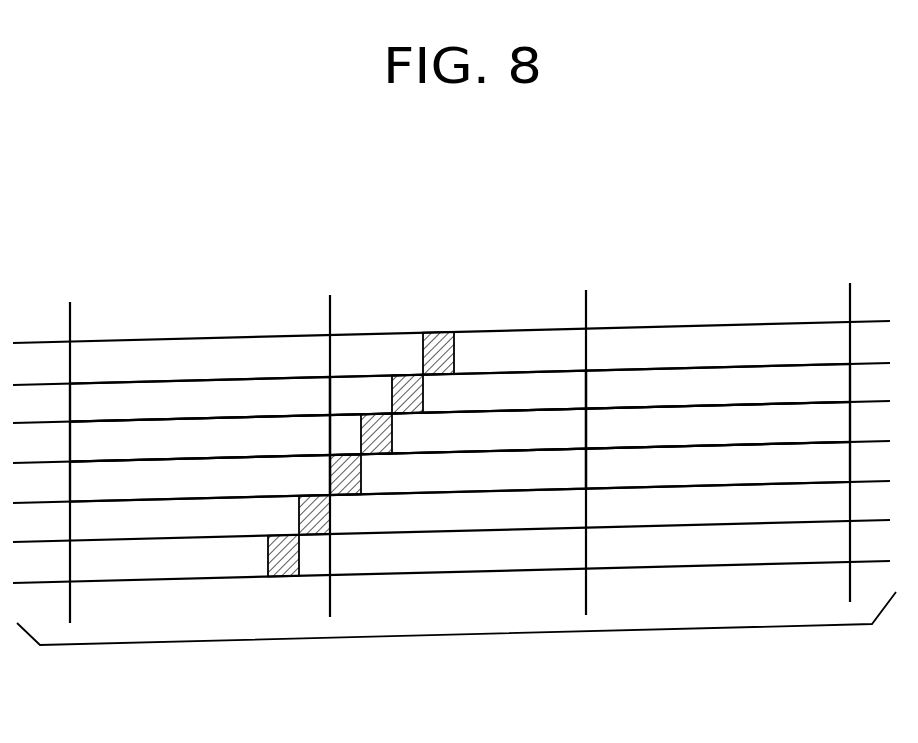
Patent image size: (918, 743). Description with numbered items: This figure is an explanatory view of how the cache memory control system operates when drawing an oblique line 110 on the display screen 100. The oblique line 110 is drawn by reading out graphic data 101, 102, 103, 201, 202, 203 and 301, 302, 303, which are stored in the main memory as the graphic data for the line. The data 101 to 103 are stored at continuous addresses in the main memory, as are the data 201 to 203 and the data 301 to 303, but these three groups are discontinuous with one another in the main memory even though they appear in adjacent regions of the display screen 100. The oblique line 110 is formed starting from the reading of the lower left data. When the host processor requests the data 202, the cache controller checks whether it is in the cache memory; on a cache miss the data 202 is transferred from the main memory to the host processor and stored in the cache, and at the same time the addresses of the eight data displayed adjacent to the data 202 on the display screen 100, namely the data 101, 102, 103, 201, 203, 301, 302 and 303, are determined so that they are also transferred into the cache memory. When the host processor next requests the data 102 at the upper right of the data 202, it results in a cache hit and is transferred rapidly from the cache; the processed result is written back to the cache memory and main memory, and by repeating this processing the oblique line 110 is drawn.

The display screen 100 is at (475, 635).
The data 101 is at (260, 396).
The data 102 is at (527, 395).
The data 103 is at (787, 384).
The oblique line 110 is at (290, 578).
The data 201 is at (100, 442).
The data 202 is at (460, 433).
The data 203 is at (648, 427).
The data 301 is at (193, 482).
The data 302 is at (428, 475).
The data 303 is at (720, 465).